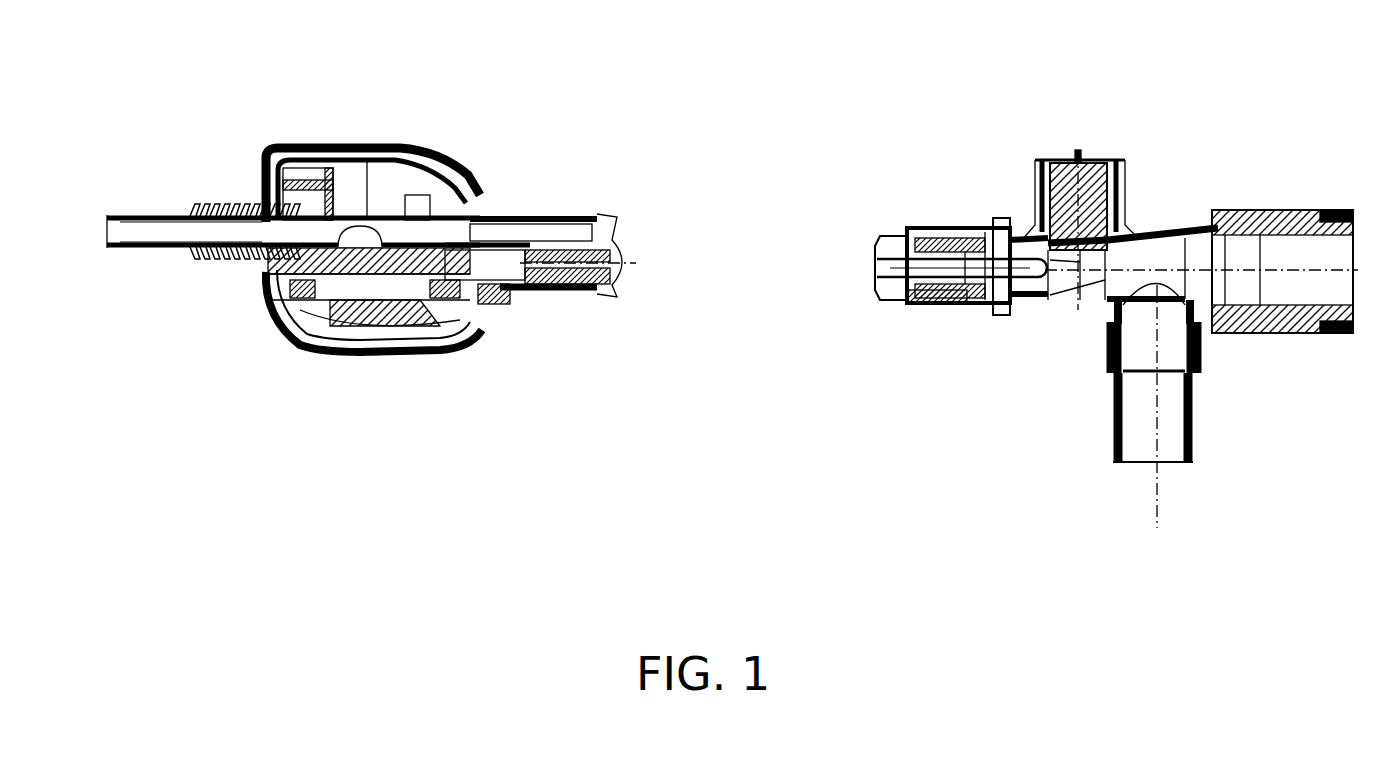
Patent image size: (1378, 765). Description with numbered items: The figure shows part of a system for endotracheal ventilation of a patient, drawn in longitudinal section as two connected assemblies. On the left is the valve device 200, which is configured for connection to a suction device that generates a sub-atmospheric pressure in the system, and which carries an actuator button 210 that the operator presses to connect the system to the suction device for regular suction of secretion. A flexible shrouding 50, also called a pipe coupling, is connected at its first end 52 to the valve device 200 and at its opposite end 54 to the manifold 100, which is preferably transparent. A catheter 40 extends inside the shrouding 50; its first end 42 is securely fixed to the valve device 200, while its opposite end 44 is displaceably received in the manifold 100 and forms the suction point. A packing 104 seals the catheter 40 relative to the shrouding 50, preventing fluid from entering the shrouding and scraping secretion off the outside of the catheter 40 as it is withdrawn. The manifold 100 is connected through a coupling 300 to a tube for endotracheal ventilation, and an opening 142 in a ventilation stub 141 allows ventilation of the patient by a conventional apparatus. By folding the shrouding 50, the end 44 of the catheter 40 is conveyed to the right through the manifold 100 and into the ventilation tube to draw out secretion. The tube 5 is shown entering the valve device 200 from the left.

The tube 5 is at (107, 214).
The valve device 200 is at (374, 138).
The actuator button 210 is at (325, 144).
The flexible shrouding 50 is at (598, 217).
The first end of catheter 42 is at (603, 283).
The first end of shrouding 52 is at (510, 298).
The catheter 40 is at (880, 263).
The packing 104 is at (937, 227).
The opposite end of catheter 44 is at (1028, 260).
The manifold 100 is at (1100, 142).
The coupling 300 is at (1323, 212).
The ventilation stub 141 is at (1115, 312).
The opening 142 is at (1177, 373).
The opposite end of shrouding 54 is at (907, 303).